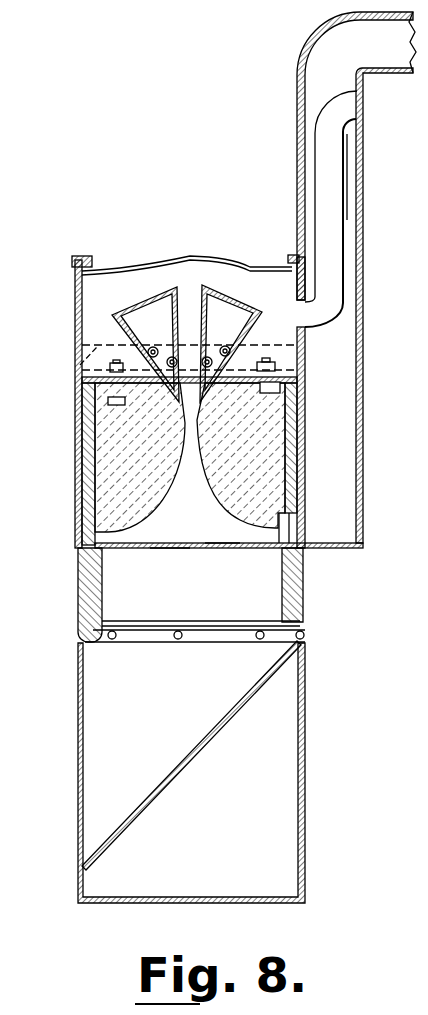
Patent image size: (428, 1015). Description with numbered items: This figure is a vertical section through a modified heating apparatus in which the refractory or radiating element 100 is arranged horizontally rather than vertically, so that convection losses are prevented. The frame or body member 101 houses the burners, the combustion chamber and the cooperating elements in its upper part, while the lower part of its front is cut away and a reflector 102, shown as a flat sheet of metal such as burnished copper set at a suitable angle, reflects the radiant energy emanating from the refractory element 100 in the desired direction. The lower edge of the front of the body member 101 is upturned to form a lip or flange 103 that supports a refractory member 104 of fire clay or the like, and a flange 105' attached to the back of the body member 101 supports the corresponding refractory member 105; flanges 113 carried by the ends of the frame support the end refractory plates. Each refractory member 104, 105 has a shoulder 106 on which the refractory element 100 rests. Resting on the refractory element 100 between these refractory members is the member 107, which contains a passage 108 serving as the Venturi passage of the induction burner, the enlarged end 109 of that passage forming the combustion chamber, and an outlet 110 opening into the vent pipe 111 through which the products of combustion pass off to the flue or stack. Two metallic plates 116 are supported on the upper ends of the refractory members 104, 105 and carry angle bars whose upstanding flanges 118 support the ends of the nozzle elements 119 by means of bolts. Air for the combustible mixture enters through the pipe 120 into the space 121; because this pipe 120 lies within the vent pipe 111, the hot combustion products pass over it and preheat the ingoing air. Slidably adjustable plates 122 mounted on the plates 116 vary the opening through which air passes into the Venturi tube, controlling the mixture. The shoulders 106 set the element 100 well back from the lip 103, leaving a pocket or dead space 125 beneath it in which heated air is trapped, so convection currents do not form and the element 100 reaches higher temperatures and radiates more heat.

The refractory or radiating element 100 is at (168, 552).
The frame or body member 101 is at (303, 778).
The reflector 102 is at (187, 758).
The lip or flange 103 is at (92, 645).
The refractory member 104 is at (88, 493).
The refractory member 105 is at (313, 448).
The flange 105' is at (331, 626).
The shoulder 106 is at (80, 562).
The member 107 is at (110, 435).
The passage 108 is at (197, 483).
The enlarged end of the passage 109 is at (212, 532).
The outlet 110 is at (279, 525).
The vent pipe 111 is at (337, 335).
The flange 113 is at (195, 656).
The metallic plate 116 is at (78, 377).
The upstanding flange 118 is at (268, 357).
The nozzle element 119 is at (160, 317).
The pipe 120 is at (329, 187).
The space 121 is at (258, 285).
The plate 122 is at (150, 372).
The pocket or dead space 125 is at (122, 603).